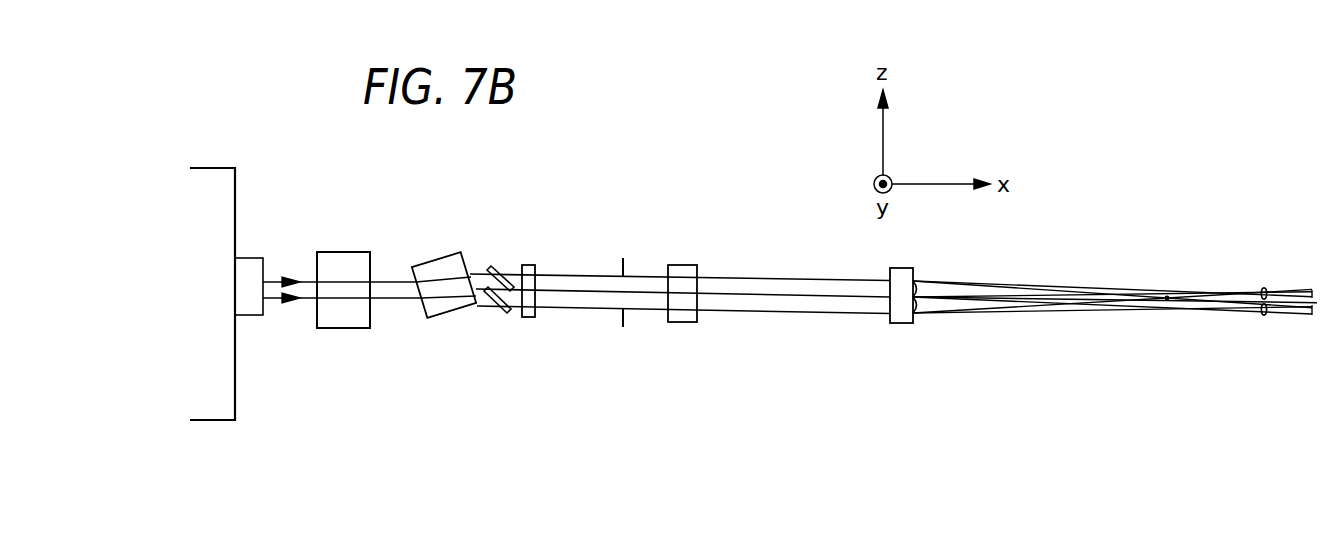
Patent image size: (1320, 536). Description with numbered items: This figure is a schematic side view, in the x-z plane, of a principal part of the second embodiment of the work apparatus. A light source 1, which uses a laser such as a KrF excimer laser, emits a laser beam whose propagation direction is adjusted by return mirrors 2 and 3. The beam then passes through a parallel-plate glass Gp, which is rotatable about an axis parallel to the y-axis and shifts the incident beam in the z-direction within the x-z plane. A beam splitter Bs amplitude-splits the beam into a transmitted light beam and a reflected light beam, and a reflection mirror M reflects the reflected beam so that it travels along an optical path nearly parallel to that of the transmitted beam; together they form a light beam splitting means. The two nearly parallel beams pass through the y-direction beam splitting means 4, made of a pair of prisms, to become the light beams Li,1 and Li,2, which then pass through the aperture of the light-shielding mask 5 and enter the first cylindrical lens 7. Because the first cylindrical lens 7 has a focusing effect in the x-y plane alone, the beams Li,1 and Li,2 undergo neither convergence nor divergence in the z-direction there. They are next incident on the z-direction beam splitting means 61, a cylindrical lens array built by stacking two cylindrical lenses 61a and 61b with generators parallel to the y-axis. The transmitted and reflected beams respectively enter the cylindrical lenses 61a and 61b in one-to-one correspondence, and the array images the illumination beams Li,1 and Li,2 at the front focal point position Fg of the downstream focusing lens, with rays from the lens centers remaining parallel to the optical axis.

The light source 1 is at (235, 186).
The return mirror 2 is at (337, 252).
The return mirror 3 is at (345, 330).
The parallel-plate glass Gp is at (431, 265).
The beam splitter Bs is at (493, 266).
The reflection mirror M is at (489, 254).
The y-direction beam splitting means 4 is at (530, 265).
The light-shielding mask 5 is at (623, 259).
The first cylindrical lens 7 is at (685, 267).
The z-direction beam splitting means 61 is at (900, 270).
The cylindrical lens 61a is at (916, 284).
The cylindrical lens 61b is at (916, 305).
The front focal point position Fg is at (1166, 300).
The light beam Li,1 is at (1264, 288).
The light beam Li,2 is at (1264, 316).